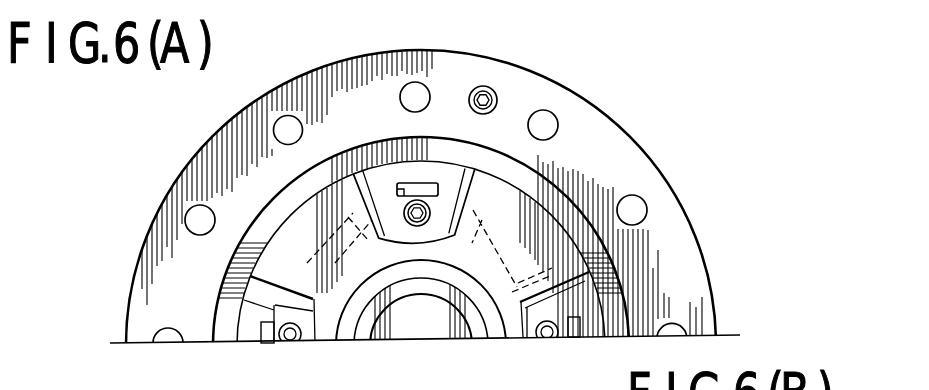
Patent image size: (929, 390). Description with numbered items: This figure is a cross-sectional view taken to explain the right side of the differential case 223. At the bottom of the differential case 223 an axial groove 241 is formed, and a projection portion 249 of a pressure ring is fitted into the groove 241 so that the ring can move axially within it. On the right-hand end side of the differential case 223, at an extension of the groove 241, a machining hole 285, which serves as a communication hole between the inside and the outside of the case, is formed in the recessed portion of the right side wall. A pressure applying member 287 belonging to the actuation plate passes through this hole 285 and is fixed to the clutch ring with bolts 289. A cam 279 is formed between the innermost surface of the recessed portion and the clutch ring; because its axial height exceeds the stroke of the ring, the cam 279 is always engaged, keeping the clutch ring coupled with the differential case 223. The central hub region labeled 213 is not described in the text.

The differential case 223 is at (682, 267).
The pressure applying member 287 is at (556, 200).
The cam 279 is at (307, 262).
The axial groove 241 is at (400, 183).
The projection portion 249 is at (423, 183).
The machining hole 285 is at (445, 207).
The bolts 289 is at (420, 222).
The hub 213 is at (436, 333).